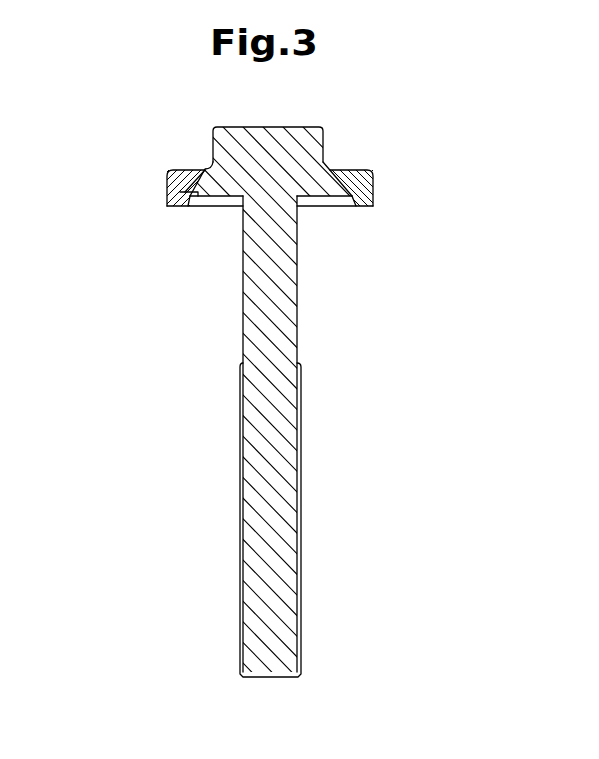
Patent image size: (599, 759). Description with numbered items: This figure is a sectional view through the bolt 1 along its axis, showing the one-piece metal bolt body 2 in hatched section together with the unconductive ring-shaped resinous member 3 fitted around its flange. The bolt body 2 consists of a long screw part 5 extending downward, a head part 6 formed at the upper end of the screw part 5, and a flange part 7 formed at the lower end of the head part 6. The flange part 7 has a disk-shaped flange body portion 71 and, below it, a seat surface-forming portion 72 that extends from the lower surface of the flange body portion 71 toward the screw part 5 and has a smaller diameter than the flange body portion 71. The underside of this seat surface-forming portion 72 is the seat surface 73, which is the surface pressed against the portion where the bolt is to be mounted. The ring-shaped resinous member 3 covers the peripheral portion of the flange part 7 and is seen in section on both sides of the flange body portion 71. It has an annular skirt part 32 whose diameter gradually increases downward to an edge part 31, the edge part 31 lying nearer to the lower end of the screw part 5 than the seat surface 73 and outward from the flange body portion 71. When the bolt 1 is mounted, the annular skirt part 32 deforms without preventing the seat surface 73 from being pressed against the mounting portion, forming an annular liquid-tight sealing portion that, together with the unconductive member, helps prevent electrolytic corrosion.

The bolt 1 is at (299, 389).
The bolt body 2 is at (280, 340).
The ring-shaped resinous member 3 is at (319, 218).
The edge part 31 is at (372, 206).
The annular skirt part 32 is at (343, 207).
The screw part 5 is at (301, 460).
The head part 6 is at (243, 135).
The flange part 7 is at (234, 210).
The flange body portion 71 is at (167, 195).
The seat surface-forming portion 72 is at (208, 207).
The seat surface 73 is at (232, 197).